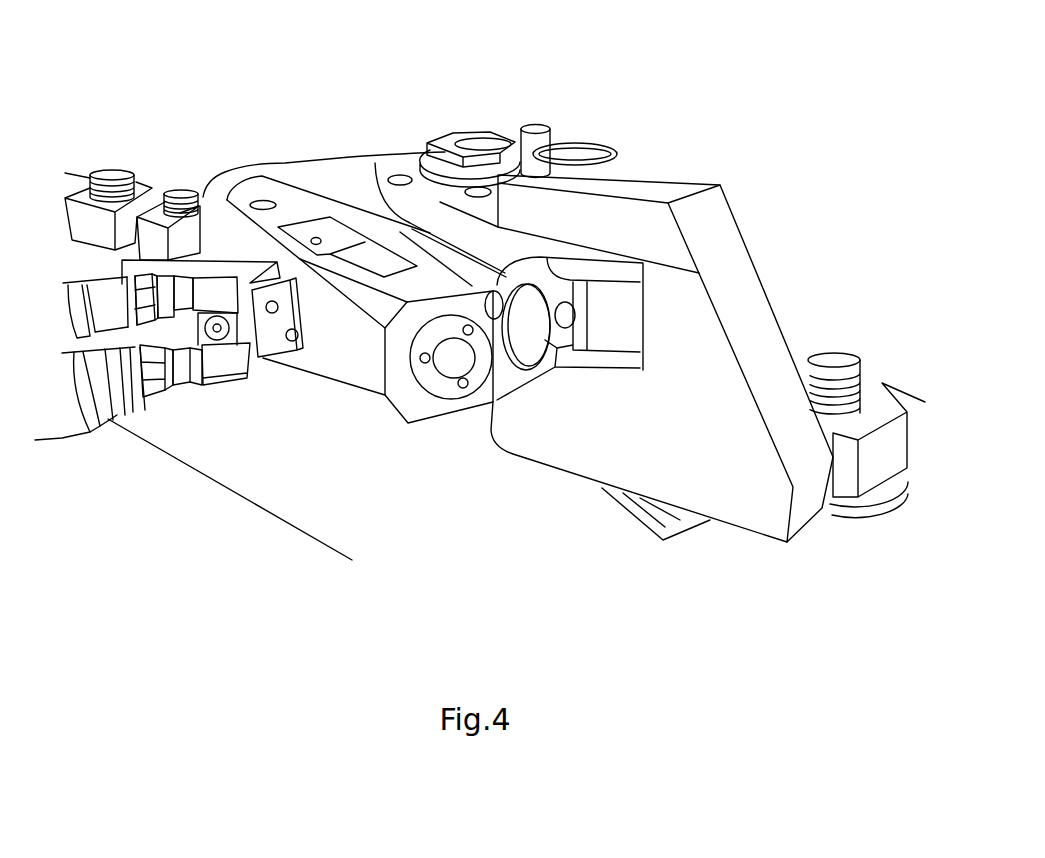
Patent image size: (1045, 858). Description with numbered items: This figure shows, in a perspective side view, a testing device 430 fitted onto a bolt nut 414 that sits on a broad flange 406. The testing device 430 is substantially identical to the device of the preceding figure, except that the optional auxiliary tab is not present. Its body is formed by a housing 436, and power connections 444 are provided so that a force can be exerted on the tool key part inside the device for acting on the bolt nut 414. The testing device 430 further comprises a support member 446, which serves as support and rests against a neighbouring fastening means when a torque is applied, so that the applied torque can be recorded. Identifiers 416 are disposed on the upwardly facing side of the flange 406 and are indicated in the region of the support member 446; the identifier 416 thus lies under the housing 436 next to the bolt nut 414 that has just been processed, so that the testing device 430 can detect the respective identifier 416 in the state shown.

The testing device 430 is at (403, 115).
The housing 436 is at (326, 178).
The support member 446 is at (573, 455).
The bolt nut 414 is at (870, 392).
The power connections 444 is at (218, 367).
The identifier 416 is at (613, 506).
The flange 406 is at (237, 489).